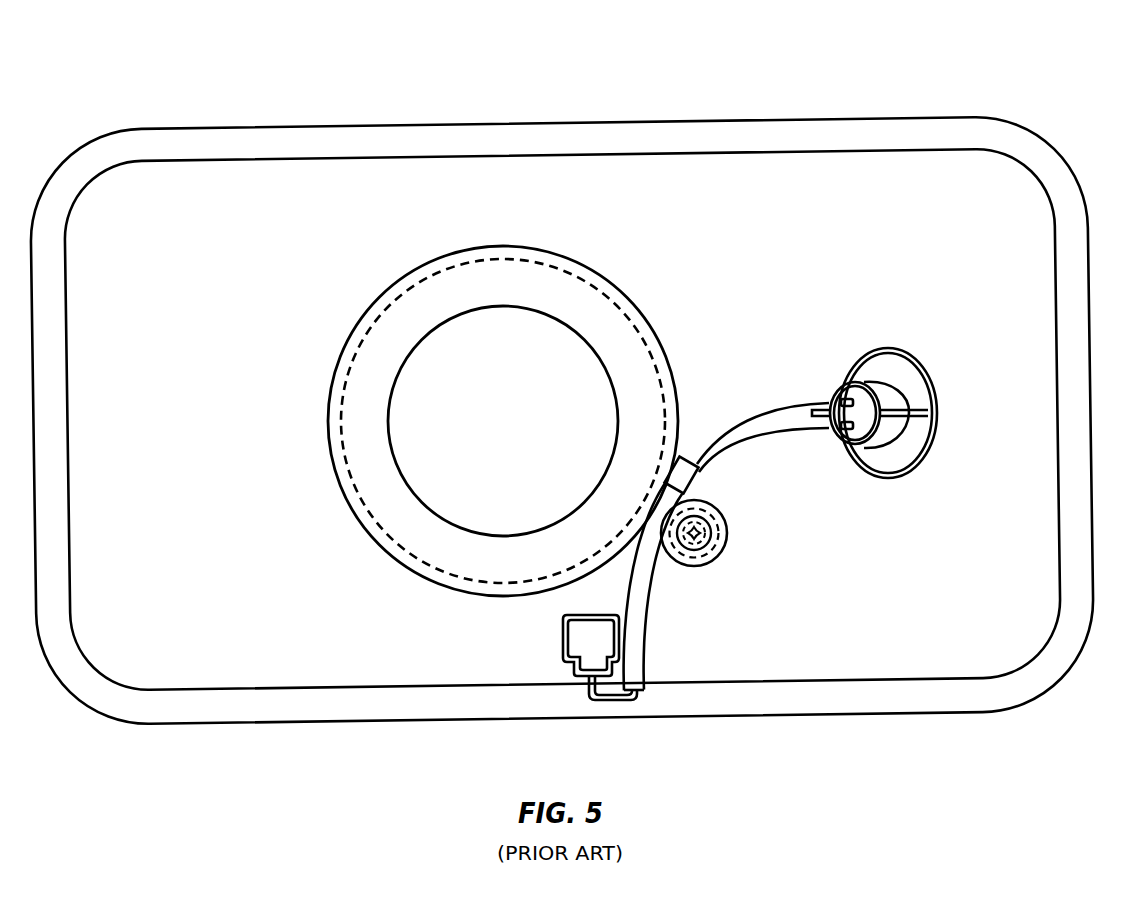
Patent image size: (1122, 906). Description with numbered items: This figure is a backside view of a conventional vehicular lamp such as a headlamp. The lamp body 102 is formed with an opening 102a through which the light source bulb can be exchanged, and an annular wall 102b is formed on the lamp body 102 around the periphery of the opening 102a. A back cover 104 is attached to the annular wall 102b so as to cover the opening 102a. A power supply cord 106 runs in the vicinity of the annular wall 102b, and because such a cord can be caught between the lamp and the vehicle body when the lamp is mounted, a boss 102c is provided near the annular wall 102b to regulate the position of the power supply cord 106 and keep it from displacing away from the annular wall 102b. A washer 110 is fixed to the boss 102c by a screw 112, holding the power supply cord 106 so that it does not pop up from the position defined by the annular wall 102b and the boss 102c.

The lamp body 102 is at (352, 122).
The opening 102a is at (390, 308).
The annular wall 102b is at (330, 429).
The boss 102c is at (709, 549).
The back cover 104 is at (625, 338).
The power supply cord 106 is at (636, 622).
The washer 110 is at (725, 537).
The screw 112 is at (699, 517).